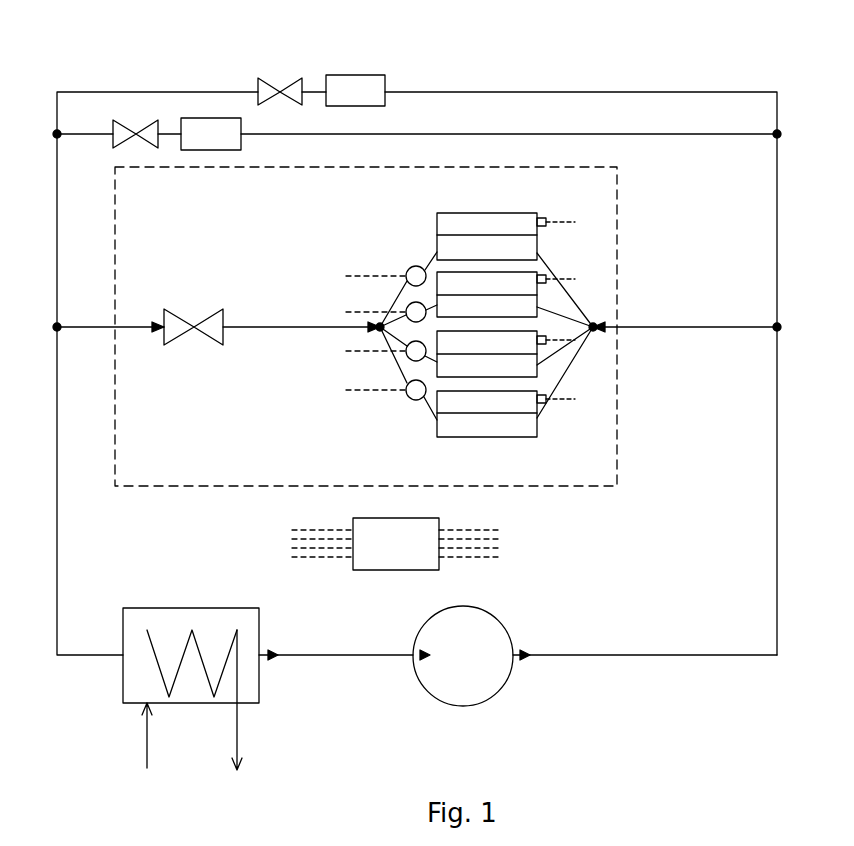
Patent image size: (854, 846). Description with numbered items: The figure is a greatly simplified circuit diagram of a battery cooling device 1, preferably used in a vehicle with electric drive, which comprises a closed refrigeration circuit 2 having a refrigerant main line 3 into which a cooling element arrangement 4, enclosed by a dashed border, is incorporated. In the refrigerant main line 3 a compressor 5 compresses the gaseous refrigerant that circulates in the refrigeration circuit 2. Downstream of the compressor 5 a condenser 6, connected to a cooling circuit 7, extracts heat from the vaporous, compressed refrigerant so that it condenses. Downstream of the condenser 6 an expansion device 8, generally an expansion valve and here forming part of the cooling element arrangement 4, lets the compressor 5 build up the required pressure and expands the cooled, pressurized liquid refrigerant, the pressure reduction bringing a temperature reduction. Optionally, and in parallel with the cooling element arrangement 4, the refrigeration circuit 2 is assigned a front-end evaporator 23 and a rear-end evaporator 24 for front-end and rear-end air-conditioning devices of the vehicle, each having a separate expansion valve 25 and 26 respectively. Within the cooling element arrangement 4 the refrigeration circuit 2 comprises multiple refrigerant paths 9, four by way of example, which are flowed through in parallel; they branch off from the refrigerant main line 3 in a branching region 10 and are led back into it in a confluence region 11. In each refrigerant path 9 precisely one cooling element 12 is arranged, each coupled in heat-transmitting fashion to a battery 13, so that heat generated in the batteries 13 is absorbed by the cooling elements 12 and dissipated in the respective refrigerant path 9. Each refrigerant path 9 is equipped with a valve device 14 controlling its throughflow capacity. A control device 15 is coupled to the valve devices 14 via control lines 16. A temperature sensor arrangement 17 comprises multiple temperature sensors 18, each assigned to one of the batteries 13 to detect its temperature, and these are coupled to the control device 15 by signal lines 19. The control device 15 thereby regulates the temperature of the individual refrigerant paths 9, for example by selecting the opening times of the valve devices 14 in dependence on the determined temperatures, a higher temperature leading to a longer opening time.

The battery cooling device 1 is at (757, 195).
The refrigeration circuit 2 is at (781, 335).
The refrigerant main line 3 is at (675, 656).
The cooling element arrangement 4 is at (622, 210).
The compressor 5 is at (480, 704).
The condenser 6 is at (123, 697).
The cooling circuit 7 is at (150, 750).
The expansion device 8 is at (205, 318).
The refrigerant paths 9 is at (573, 275).
The branching region 10 is at (374, 332).
The confluence region 11 is at (598, 331).
The cooling element 12 is at (455, 250).
The battery 13 is at (470, 223).
The valve device 14 is at (410, 267).
The control device 15 is at (576, 378).
The control lines 16 is at (378, 271).
The temperature sensor arrangement 17 is at (545, 212).
The temperature sensors 18 is at (562, 281).
The signal lines 19 is at (553, 218).
The front-end evaporator 23 is at (224, 150).
The rear-end evaporator 24 is at (352, 75).
The expansion valve 25 is at (138, 137).
The expansion valve 26 is at (283, 82).